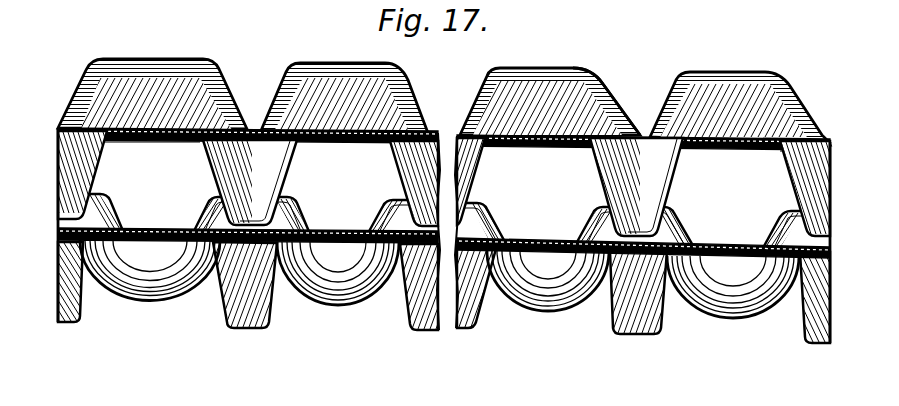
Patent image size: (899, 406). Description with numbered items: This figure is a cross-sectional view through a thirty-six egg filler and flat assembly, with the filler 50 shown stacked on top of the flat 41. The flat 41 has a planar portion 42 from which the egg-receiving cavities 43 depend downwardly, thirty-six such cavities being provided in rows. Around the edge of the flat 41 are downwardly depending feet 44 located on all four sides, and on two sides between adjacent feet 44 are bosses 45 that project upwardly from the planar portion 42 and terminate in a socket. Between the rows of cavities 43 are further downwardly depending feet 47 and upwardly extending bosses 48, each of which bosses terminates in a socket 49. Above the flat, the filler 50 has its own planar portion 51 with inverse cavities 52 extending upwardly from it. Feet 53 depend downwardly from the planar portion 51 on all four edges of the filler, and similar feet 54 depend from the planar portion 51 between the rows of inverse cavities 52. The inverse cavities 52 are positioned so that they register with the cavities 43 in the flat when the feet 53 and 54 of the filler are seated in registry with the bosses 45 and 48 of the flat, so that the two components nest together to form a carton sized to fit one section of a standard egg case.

The flat 41 is at (218, 306).
The planar portion 42 is at (353, 231).
The cavities 43 is at (137, 300).
The feet 44 is at (70, 323).
The bosses 45 is at (118, 200).
The feet 47 is at (253, 327).
The bosses 48 is at (295, 208).
The socket 49 is at (584, 228).
The filler 50 is at (612, 84).
The planar portion 51 is at (253, 127).
The inverse cavities 52 is at (144, 59).
The feet 53 is at (112, 144).
The feet 54 is at (293, 166).